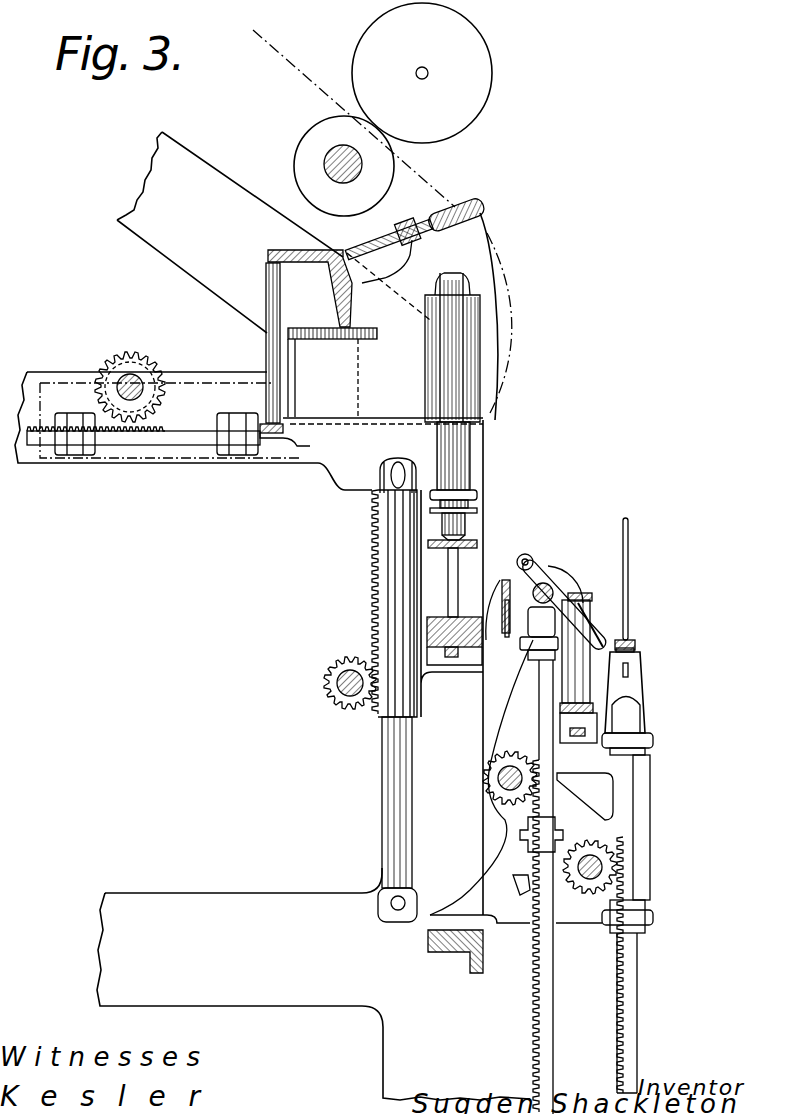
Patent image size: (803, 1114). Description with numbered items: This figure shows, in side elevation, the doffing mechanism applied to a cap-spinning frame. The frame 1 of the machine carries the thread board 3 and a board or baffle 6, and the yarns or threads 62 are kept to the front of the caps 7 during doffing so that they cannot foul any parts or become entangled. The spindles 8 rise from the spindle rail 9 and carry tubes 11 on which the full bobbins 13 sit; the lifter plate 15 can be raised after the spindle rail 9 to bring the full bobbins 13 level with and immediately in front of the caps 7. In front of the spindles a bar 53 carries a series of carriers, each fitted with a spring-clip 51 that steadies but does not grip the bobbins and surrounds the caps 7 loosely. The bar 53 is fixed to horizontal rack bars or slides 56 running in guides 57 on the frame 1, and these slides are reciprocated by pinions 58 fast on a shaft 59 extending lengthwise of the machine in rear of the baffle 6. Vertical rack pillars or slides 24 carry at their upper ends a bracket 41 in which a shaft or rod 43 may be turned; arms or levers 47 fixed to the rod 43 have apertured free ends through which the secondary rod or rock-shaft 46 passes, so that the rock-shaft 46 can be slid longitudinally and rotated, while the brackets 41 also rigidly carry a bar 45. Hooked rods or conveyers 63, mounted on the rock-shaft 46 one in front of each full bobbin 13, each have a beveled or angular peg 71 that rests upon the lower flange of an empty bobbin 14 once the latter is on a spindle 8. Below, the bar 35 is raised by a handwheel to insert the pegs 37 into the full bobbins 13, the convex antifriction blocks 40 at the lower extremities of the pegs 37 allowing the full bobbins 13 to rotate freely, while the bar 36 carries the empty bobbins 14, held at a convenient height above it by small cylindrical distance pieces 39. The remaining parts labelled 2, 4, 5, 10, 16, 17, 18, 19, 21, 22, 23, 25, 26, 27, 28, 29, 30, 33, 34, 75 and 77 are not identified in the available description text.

The frame 1 is at (308, 616).
The feed rolls 2 is at (393, 109).
The thread board 3 is at (472, 205).
The housing 4 is at (473, 262).
The bracket 5 is at (290, 250).
The board or baffle 6 is at (266, 289).
The caps 7 is at (427, 340).
The spindles 8 is at (470, 580).
The spindle rail 9 is at (432, 617).
The collar 10 is at (466, 531).
The tubes 11 is at (468, 502).
The full bobbins 13 is at (470, 442).
The empty bobbins 14 is at (592, 597).
The lifter plate 15 is at (478, 546).
The rack bar 16 is at (386, 566).
The rod 17 is at (410, 812).
The shaft 18 is at (333, 702).
The pinion 19 is at (336, 683).
The bearing block 21 is at (455, 951).
The rod 22 is at (650, 786).
The rack 23 is at (640, 1015).
The rack pillars or slides 24 is at (533, 1026).
The collar 25 is at (662, 732).
The collar 26 is at (528, 651).
The shaft 27 is at (592, 855).
The pinion 28 is at (490, 760).
The pinion 29 is at (603, 866).
The shaft 30 is at (498, 778).
The slide body 33 is at (645, 690).
The recess 34 is at (626, 715).
The bar 35 is at (637, 646).
The bar 36 is at (566, 744).
The pegs 37 is at (630, 523).
The distance pieces 39 is at (566, 724).
The bearing or antifriction blocks 40 is at (636, 643).
The bracket 41 is at (560, 566).
The shaft or rod 43 is at (496, 606).
The bar 45 is at (503, 610).
The secondary rod or rock-shaft 46 is at (528, 555).
The arms or levers 47 is at (533, 586).
The spring-clip 51 is at (377, 339).
The bar 53 is at (266, 424).
The rack bars or slides 56 is at (163, 420).
The guides 57 is at (76, 456).
The pinions 58 is at (150, 360).
The shaft 59 is at (143, 385).
The yarns or threads 62 is at (294, 60).
The hooked rods or conveyers 63 is at (590, 654).
The beveled or angular peg 71 is at (590, 616).
The flange 75 is at (522, 637).
The slot 77 is at (630, 671).